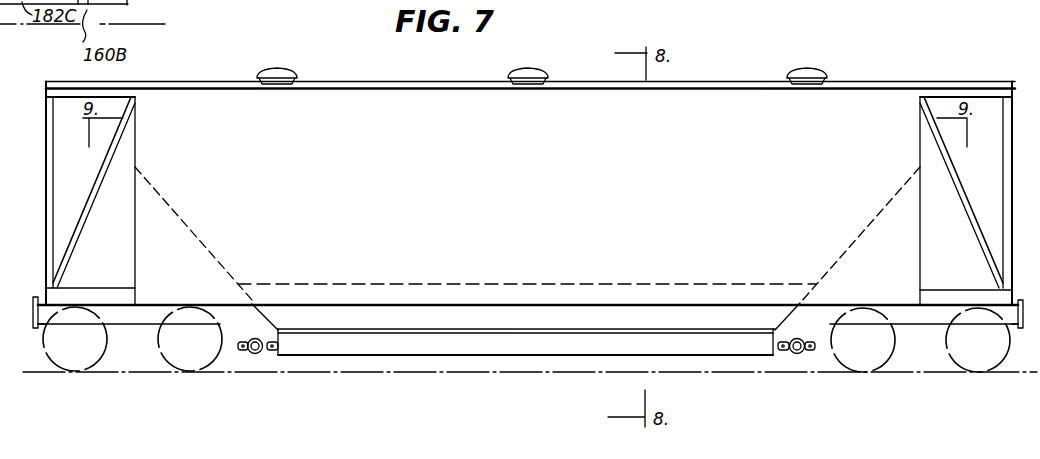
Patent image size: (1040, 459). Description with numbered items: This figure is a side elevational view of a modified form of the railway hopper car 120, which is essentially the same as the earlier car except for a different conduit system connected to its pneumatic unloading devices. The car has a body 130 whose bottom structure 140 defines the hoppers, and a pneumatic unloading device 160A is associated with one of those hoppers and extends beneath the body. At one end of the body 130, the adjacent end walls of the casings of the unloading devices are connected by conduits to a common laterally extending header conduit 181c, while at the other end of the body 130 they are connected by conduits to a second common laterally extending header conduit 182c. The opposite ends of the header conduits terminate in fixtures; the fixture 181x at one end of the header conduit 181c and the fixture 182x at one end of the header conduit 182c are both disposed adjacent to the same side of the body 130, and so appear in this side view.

The railway hopper car 120 is at (226, 76).
The body 130 is at (729, 113).
The bottom structure 140 is at (548, 285).
The pneumatic unloading device 160A is at (396, 343).
The fixture 181x is at (802, 340).
The header conduit 181c is at (797, 354).
The fixture 182x is at (251, 339).
The header conduit 182c is at (257, 354).